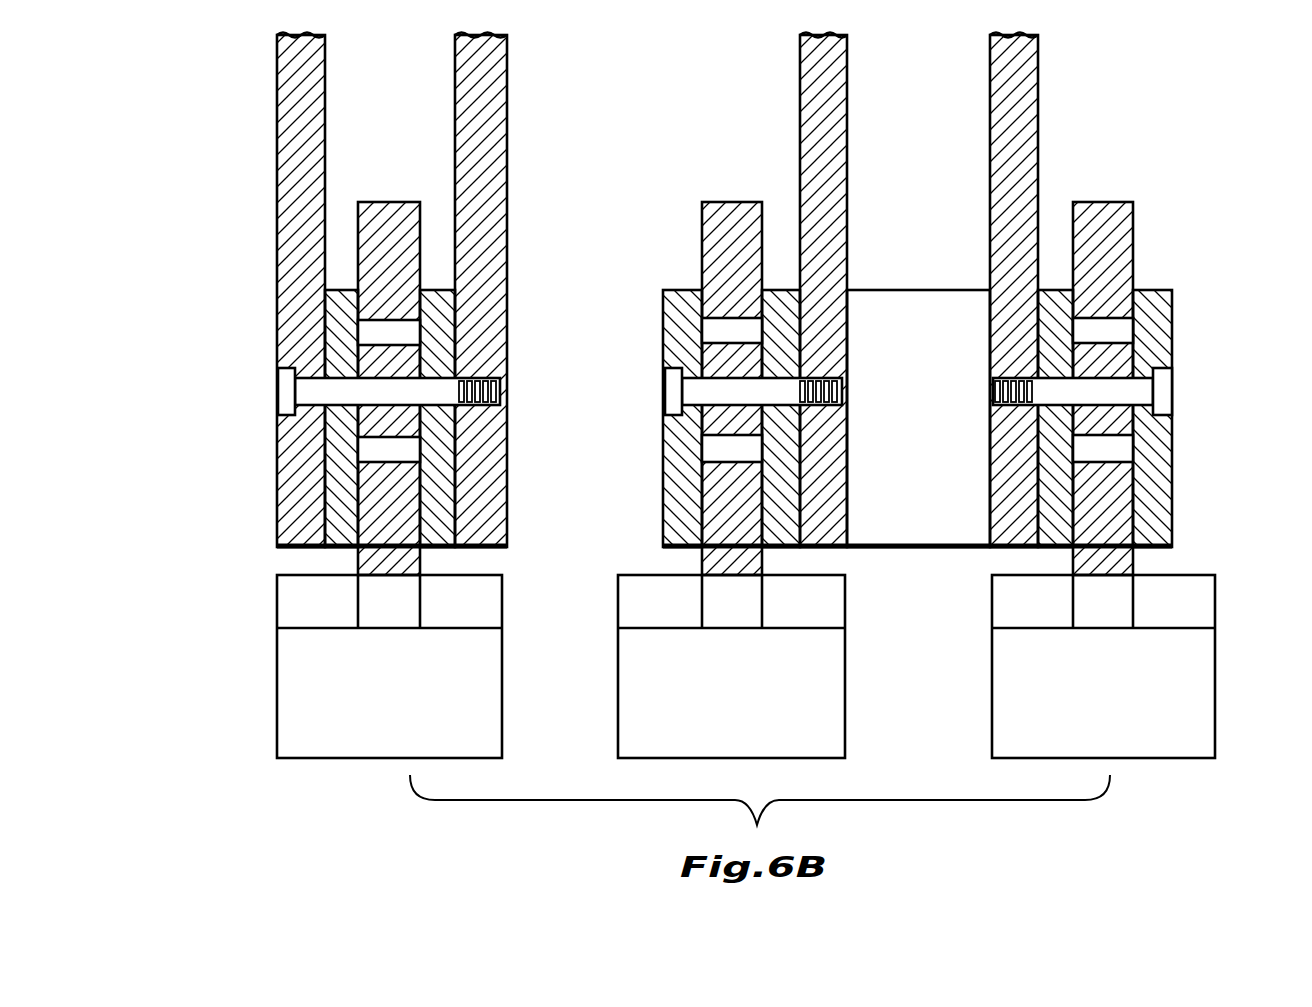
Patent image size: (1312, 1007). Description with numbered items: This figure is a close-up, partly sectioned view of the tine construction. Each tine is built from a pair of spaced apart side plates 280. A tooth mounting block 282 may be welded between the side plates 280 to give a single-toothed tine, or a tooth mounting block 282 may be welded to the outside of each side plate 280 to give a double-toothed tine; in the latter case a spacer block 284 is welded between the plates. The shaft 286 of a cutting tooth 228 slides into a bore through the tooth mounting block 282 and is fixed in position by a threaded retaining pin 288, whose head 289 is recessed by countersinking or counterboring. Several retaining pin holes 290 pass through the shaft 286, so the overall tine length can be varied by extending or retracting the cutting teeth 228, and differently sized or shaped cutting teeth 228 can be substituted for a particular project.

The cutting tooth 228 is at (287, 690).
The side plate 280 is at (277, 127).
The tooth mounting block 282 is at (440, 290).
The spacer block 284 is at (895, 290).
The shaft 286 is at (388, 202).
The threaded retaining pin 288 is at (312, 395).
The head 289 is at (285, 388).
The retaining pin hole 290 is at (372, 328).